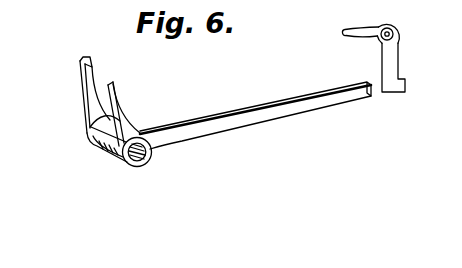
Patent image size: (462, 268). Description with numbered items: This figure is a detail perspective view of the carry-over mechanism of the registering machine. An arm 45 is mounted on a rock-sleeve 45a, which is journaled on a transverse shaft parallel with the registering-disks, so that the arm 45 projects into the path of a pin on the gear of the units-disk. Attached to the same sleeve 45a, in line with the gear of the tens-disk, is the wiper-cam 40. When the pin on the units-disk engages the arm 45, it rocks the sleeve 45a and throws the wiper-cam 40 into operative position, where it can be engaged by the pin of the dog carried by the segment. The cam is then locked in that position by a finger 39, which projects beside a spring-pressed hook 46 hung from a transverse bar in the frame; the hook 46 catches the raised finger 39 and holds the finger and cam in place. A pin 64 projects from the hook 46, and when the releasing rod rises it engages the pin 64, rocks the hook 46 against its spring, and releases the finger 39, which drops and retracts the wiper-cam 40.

The finger 39 is at (225, 115).
The wiper-cam 40 is at (112, 102).
The arm 45 is at (94, 70).
The rock-sleeve 45a is at (104, 145).
The hook 46 is at (392, 63).
The pin 64 is at (348, 28).